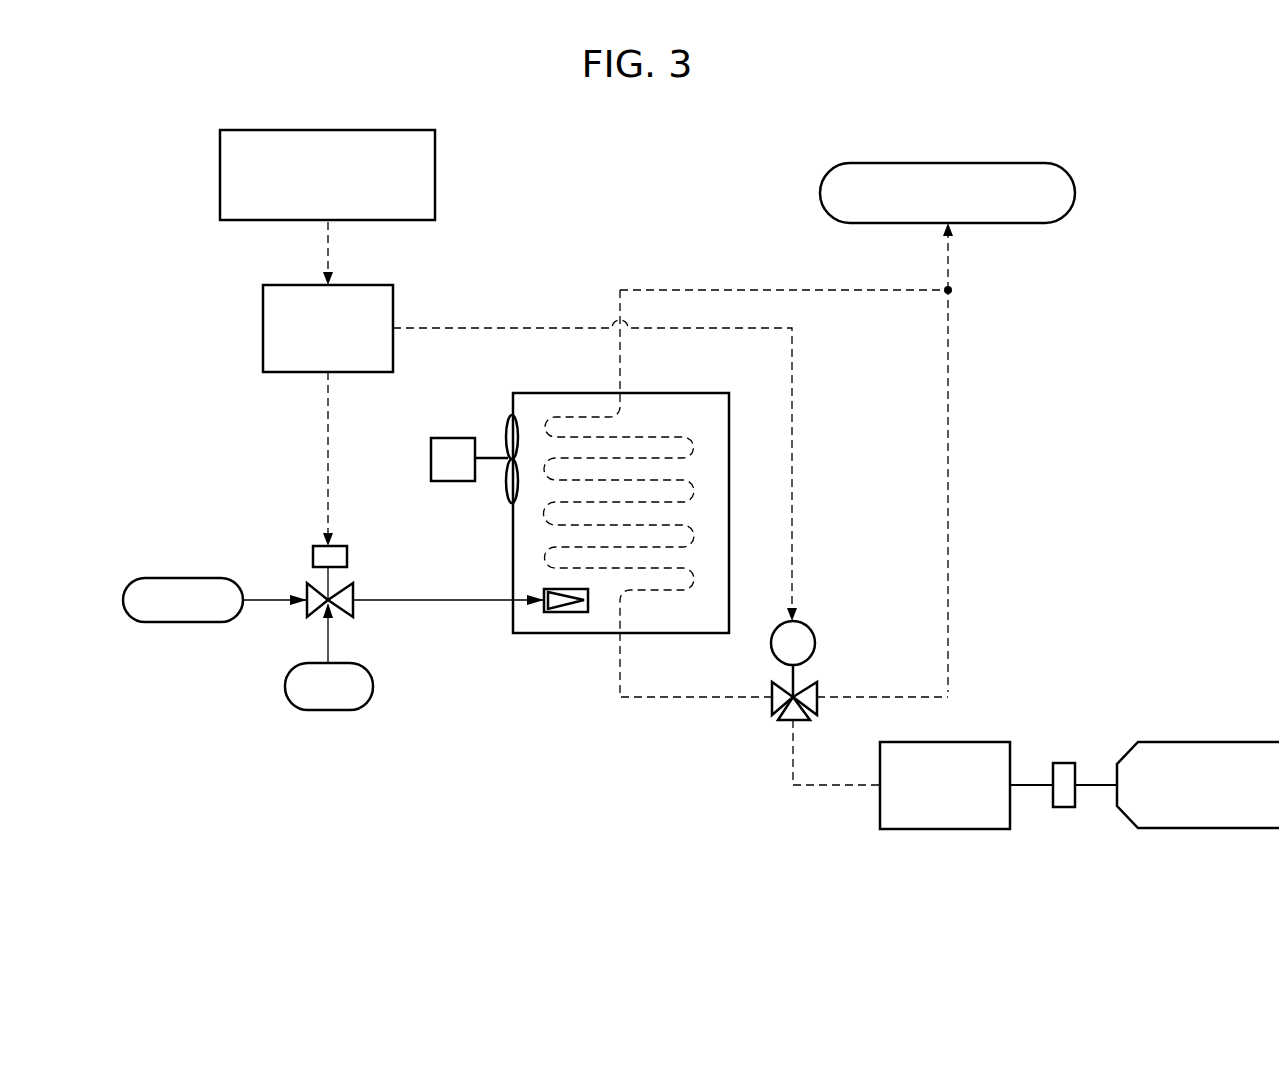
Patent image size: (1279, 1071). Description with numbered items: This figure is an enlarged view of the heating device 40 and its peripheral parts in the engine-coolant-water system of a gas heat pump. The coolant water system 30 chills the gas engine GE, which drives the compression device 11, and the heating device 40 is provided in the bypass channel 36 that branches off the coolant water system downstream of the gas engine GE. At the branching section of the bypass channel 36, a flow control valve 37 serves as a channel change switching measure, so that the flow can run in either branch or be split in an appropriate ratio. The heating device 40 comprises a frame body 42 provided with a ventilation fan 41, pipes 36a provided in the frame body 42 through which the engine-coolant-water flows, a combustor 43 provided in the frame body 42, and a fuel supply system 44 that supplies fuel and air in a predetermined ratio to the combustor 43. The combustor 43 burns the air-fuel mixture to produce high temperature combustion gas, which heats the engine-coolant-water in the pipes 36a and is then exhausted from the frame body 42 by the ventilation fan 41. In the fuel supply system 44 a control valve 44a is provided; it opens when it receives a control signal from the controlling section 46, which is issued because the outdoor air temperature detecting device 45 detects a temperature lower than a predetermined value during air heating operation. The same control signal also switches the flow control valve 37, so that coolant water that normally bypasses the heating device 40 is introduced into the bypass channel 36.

The compression device 11 is at (1186, 742).
The coolant water system 30 is at (985, 505).
The bypass channel 36 is at (686, 700).
The pipes 36a is at (652, 437).
The flow control valve 37 is at (818, 688).
The heating device 40 is at (541, 534).
The ventilation fan 41 is at (506, 485).
The frame body 42 is at (552, 393).
The combustor 43 is at (569, 613).
The fuel supply system 44 is at (269, 640).
The control valve 44a is at (355, 585).
The outdoor air temperature detecting device 45 is at (220, 178).
The controlling section 46 is at (263, 332).
The gas engine GE is at (975, 742).